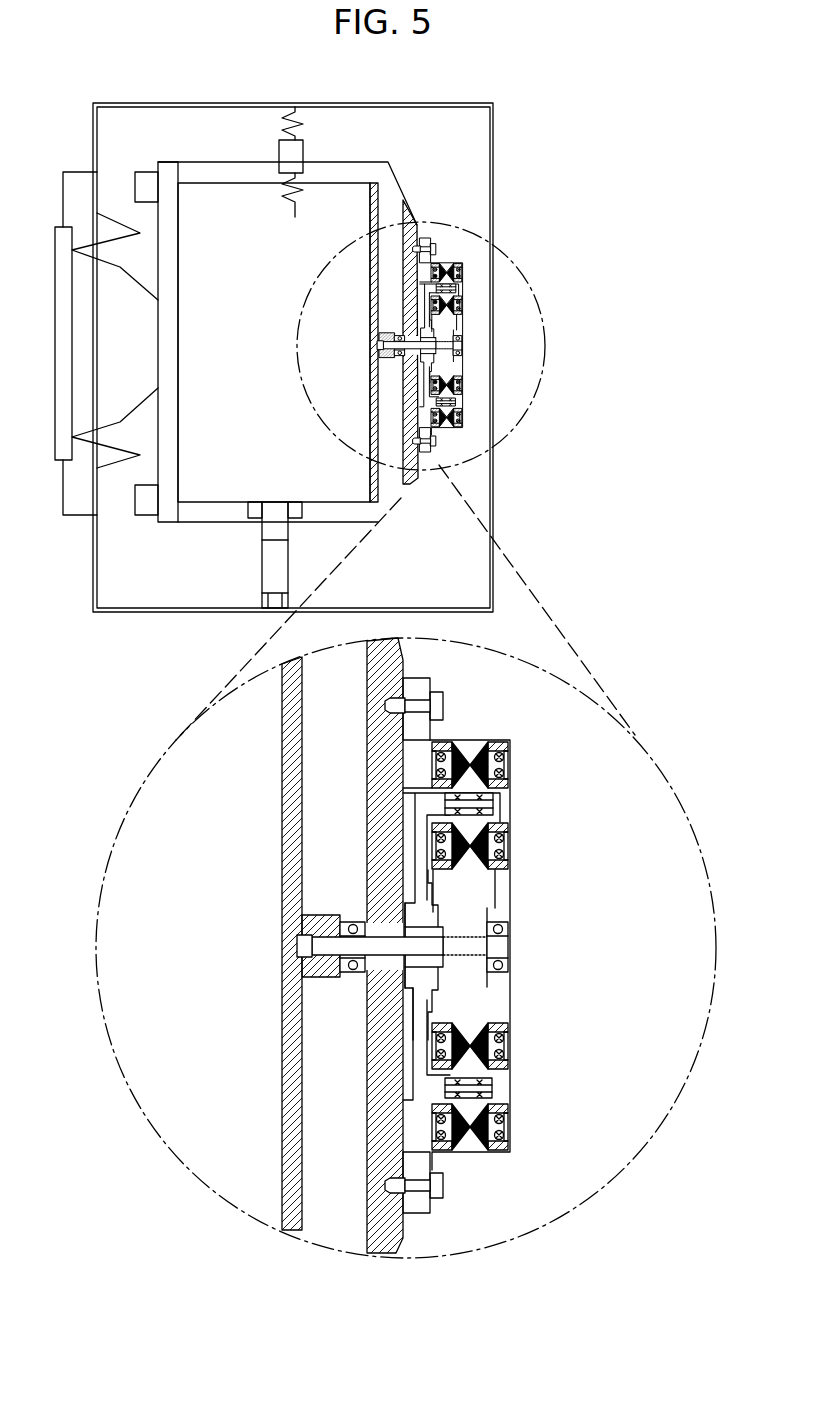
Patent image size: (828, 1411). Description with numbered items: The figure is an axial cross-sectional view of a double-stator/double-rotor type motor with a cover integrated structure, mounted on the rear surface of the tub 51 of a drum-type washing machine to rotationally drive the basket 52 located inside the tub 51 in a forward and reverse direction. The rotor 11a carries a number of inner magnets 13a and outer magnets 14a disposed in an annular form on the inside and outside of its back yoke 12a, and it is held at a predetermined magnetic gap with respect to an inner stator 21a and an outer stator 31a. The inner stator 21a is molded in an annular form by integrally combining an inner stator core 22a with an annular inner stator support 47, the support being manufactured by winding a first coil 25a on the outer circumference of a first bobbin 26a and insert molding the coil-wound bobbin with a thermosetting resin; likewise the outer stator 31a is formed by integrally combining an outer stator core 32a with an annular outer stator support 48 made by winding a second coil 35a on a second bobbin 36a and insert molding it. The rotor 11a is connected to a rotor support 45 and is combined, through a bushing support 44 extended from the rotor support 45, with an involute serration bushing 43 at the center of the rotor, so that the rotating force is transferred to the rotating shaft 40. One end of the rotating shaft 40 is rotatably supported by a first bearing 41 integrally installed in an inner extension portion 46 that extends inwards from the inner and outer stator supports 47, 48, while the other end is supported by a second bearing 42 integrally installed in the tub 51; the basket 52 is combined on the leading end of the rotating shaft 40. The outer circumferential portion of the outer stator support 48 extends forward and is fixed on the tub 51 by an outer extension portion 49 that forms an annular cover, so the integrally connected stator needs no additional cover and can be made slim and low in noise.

The rotor 11a is at (528, 1087).
The back yoke 12a is at (505, 1088).
The inner magnets 13a is at (508, 1071).
The outer magnets 14a is at (508, 1104).
The inner stator 21a is at (531, 843).
The inner stator core 22a is at (508, 866).
The first coil 25a is at (508, 842).
The first bobbin 26a is at (508, 822).
The outer stator 31a is at (531, 777).
The outer stator core 32a is at (500, 793).
The second coil 35a is at (508, 770).
The second bobbin 36a is at (508, 744).
The rotating shaft 40 is at (490, 950).
The first bearing 41 is at (508, 962).
The second bearing 42 is at (340, 975).
The bushing 43 is at (420, 924).
The bushing support 44 is at (416, 979).
The rotor support 45 is at (430, 1005).
The inner extension portion 46 is at (512, 1006).
The inner stator support 47 is at (512, 1043).
The outer stator support 48 is at (512, 1128).
The outer extension portion 49 is at (433, 681).
The tub 51 is at (418, 482).
The basket 52 is at (378, 498).